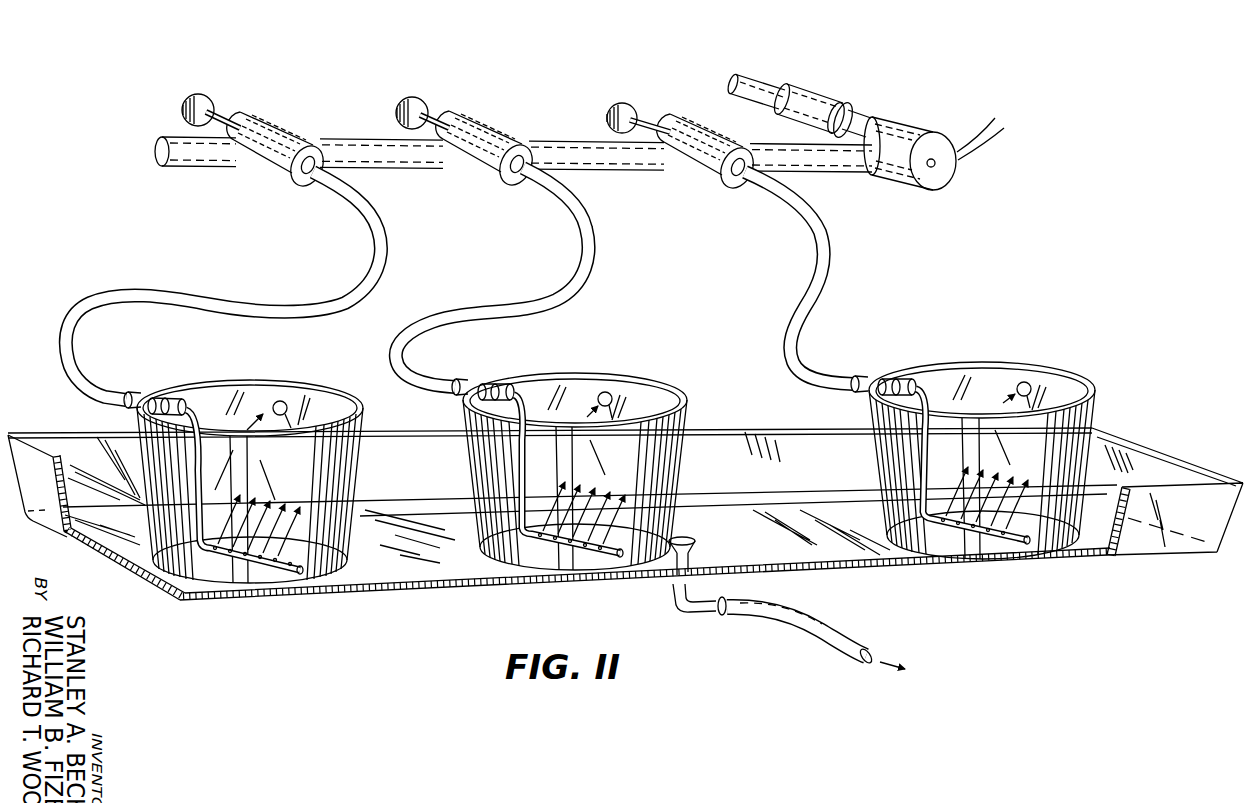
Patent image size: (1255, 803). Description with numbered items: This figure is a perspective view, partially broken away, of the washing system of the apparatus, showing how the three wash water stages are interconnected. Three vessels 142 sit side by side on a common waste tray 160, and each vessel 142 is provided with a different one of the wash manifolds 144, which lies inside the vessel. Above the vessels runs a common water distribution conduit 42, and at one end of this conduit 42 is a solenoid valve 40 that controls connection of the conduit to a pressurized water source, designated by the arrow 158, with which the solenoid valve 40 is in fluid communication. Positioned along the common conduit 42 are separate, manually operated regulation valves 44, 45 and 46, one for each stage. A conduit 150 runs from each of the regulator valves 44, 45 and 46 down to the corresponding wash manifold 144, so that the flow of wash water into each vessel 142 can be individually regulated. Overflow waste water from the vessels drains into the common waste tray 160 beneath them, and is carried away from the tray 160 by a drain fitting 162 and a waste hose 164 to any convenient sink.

The solenoid valve 40 is at (907, 133).
The water distribution conduit 42 is at (411, 160).
The regulation valve 44 is at (214, 84).
The regulation valve 45 is at (417, 97).
The regulation valve 46 is at (622, 103).
The vessel 142 is at (272, 372).
The wash manifold 144 is at (193, 400).
The conduit 150 is at (385, 267).
The pressurized water source 158 is at (727, 77).
The common waste tray 160 is at (753, 427).
The drain fitting 162 is at (672, 602).
The waste hose 164 is at (827, 617).